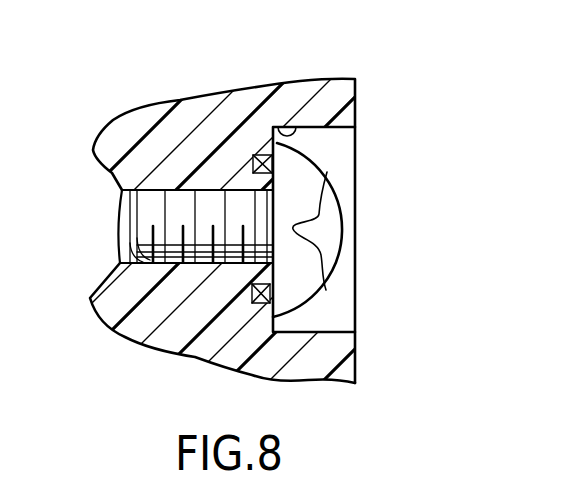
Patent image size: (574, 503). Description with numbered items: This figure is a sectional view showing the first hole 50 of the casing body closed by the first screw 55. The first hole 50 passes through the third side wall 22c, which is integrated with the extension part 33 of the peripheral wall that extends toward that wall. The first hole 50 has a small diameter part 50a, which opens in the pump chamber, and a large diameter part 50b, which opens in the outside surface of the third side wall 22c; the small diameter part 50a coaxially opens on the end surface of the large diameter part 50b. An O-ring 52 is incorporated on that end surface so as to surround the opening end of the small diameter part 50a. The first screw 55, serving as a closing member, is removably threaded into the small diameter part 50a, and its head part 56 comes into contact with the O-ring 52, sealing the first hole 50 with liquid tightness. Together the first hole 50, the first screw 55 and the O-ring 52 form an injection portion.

The first hole 50 is at (272, 32).
The small diameter part 50a is at (191, 192).
The large diameter part 50b is at (276, 127).
The third side wall 22c is at (334, 100).
The head part 56 is at (313, 177).
The O-ring 52 is at (272, 291).
The first screw 55 is at (152, 212).
The extension part 33 is at (155, 332).